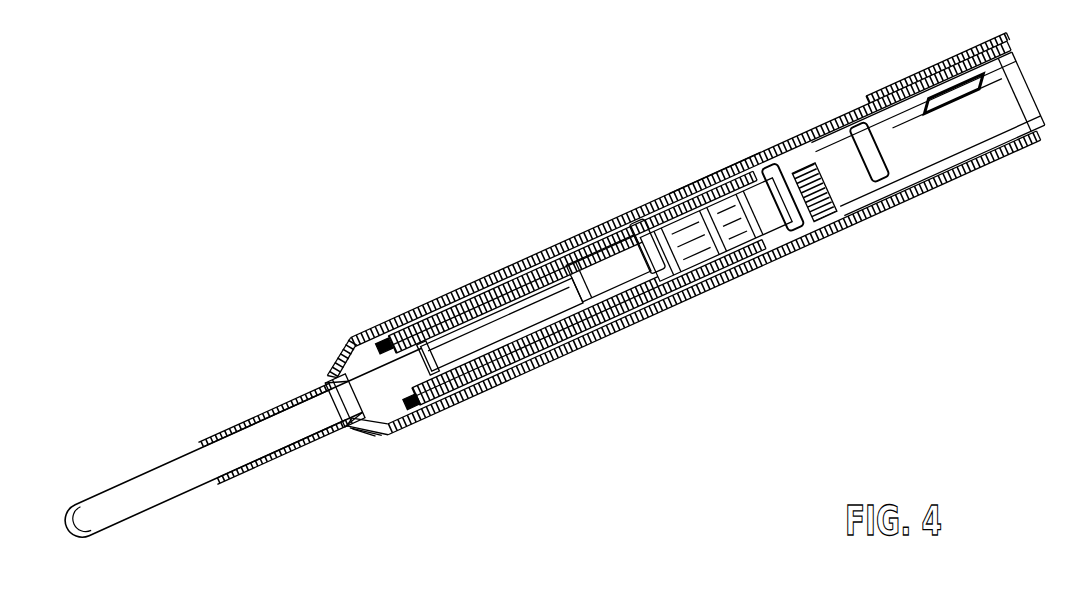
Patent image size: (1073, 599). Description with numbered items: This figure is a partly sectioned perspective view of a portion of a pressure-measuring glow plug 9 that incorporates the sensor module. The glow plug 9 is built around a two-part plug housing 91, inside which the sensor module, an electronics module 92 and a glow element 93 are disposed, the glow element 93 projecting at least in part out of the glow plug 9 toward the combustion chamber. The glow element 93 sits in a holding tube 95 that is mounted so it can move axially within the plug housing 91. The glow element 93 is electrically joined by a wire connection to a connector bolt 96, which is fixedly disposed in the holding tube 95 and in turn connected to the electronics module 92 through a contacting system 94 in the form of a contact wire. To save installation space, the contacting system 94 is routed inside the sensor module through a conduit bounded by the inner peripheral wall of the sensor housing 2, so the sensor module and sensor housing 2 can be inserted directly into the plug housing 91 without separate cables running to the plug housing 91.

The pressure-measuring glow plug 9 is at (400, 132).
The plug housing 91 is at (790, 137).
The electronics module 92 is at (983, 123).
The glow element 93 is at (142, 487).
The contacting system 94 is at (713, 173).
The holding tube 95 is at (257, 413).
The connector bolt 96 is at (472, 340).
The sensor housing 2 is at (733, 270).